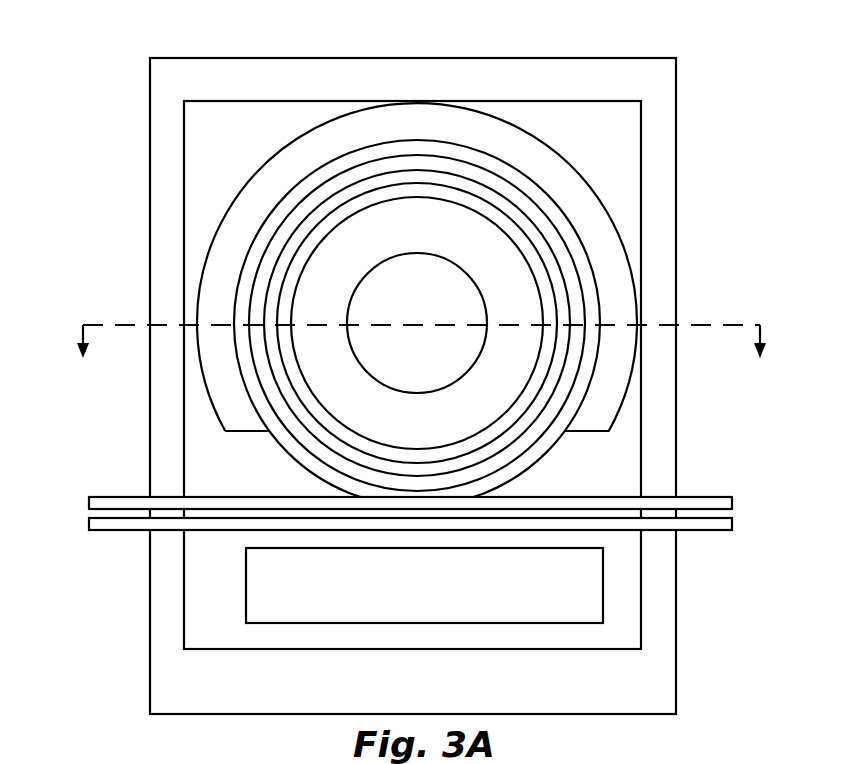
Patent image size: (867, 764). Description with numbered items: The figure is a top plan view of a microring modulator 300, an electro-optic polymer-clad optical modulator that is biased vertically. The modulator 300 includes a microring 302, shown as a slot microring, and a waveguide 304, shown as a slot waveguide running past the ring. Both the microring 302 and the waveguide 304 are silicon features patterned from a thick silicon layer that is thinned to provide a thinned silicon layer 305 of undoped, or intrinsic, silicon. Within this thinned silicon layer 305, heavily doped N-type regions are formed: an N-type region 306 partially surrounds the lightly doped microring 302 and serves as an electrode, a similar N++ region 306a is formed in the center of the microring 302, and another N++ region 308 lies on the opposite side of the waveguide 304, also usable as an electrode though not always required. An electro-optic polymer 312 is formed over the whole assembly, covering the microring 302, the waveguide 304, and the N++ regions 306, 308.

The microring modulator 300 is at (113, 100).
The microring 302 is at (297, 443).
The waveguide 304 is at (85, 497).
The thinned silicon layer 305 is at (622, 73).
The N-type region 306 is at (593, 212).
The N++ region 306a is at (463, 298).
The N++ region 308 is at (585, 577).
The electro-optic polymer 312 is at (627, 128).